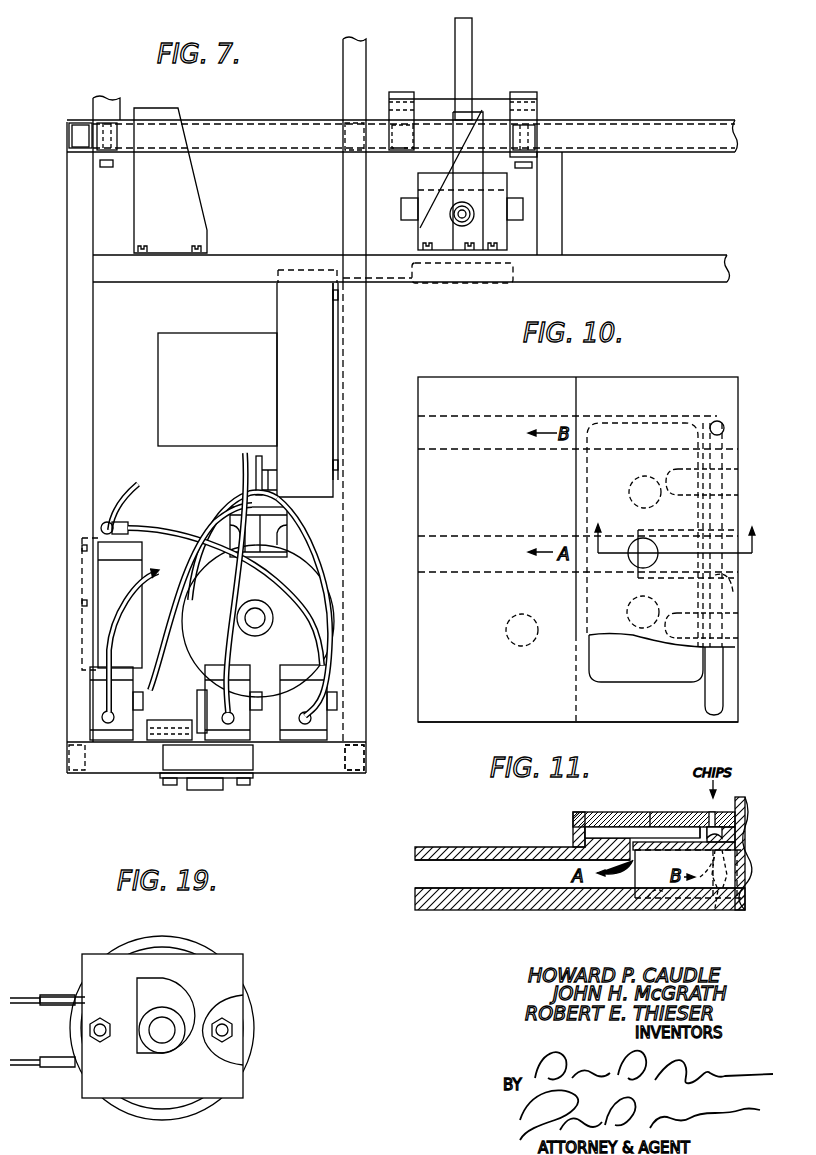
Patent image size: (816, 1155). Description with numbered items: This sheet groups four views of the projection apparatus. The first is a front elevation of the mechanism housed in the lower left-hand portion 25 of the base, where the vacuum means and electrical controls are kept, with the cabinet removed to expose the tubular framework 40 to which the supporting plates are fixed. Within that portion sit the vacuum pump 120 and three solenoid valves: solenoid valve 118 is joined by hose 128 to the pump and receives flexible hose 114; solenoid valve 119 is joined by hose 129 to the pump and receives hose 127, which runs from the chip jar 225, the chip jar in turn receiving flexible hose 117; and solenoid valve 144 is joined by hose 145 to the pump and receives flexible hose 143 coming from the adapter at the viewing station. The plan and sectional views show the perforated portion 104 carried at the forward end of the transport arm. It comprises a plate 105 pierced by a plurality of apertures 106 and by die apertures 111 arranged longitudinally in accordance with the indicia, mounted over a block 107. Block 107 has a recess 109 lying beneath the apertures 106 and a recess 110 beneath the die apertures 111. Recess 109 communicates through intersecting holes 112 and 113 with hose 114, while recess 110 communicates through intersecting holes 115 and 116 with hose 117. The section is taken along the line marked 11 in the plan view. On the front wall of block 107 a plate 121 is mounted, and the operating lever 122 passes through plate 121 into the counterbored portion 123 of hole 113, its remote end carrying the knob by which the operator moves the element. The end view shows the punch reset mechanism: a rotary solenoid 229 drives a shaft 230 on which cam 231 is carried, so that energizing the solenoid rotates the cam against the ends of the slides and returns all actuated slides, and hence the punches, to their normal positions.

In FIG. 7, the tubular framework 40 is at (73, 200).
In FIG. 7, the left-hand portion of base 25 is at (97, 430).
In FIG. 7, the flexible hose 117 is at (135, 487).
In FIG. 7, the flexible hose 143 is at (242, 462).
In FIG. 7, the hose 127 is at (165, 527).
In FIG. 7, the vacuum pump 120 is at (203, 537).
In FIG. 7, the hose 129 is at (303, 538).
In FIG. 7, the chip jar 225 is at (127, 572).
In FIG. 7, the flexible hose 114 is at (145, 640).
In FIG. 7, the hose 128 is at (170, 647).
In FIG. 7, the hose 145 is at (200, 687).
In FIG. 7, the solenoid valve 118 is at (98, 710).
In FIG. 7, the solenoid valve 144 is at (245, 725).
In FIG. 7, the solenoid valve 119 is at (317, 727).
In FIG. 10, the hole 116 is at (466, 415).
In FIG. 11, the hole 116 is at (663, 897).
In FIG. 10, the plate 105 is at (667, 390).
In FIG. 11, the plate 105 is at (618, 812).
In FIG. 10, the hole 115 is at (722, 426).
In FIG. 11, the hole 115 is at (712, 908).
In FIG. 10, the section line 11- 11 is at (682, 529).
In FIG. 10, the hole 112 is at (637, 562).
In FIG. 11, the hole 112 is at (585, 837).
In FIG. 10, the hole 113 is at (454, 573).
In FIG. 11, the hole 113 is at (455, 888).
In FIG. 10, the counterbored portion 123 is at (733, 588).
In FIG. 11, the counterbored portion 123 is at (645, 902).
In FIG. 10, the recess 109 is at (593, 668).
In FIG. 11, the recess 109 is at (640, 832).
In FIG. 10, the recess 110 is at (715, 682).
In FIG. 11, the recess 110 is at (720, 833).
In FIG. 10, the block 107 is at (440, 708).
In FIG. 11, the block 107 is at (450, 847).
In FIG. 11, the perforated portion 104 is at (572, 815).
In FIG. 11, the apertures 106 is at (657, 812).
In FIG. 11, the die apertures 111 is at (710, 812).
In FIG. 11, the plate 121 is at (737, 800).
In FIG. 11, the operating lever 122 is at (642, 877).
In FIG. 19, the rotary solenoid 229 is at (188, 938).
In FIG. 19, the cam 231 is at (182, 988).
In FIG. 19, the shaft 230 is at (170, 1035).